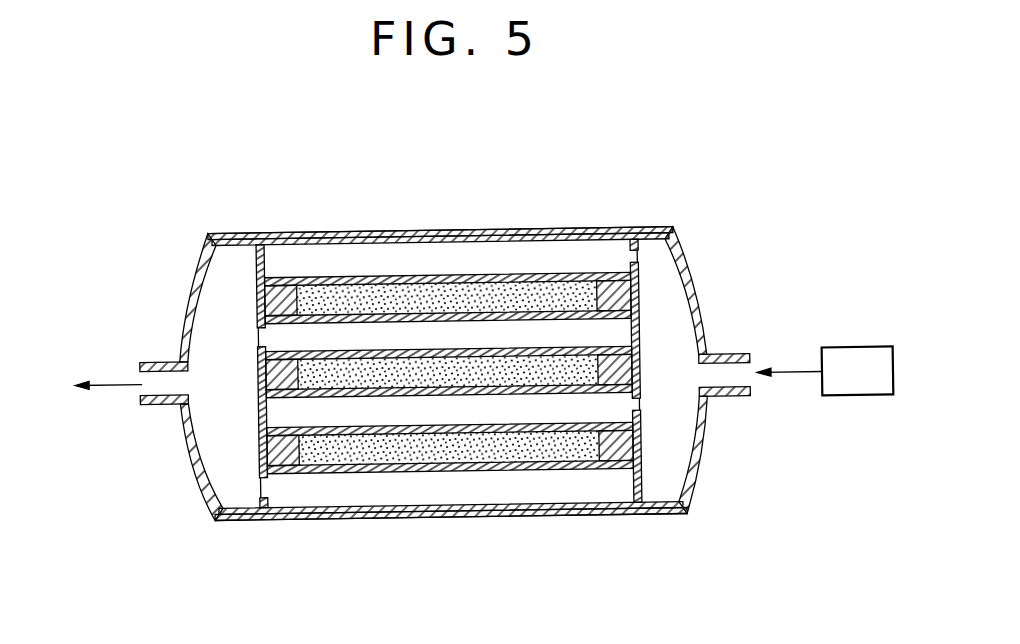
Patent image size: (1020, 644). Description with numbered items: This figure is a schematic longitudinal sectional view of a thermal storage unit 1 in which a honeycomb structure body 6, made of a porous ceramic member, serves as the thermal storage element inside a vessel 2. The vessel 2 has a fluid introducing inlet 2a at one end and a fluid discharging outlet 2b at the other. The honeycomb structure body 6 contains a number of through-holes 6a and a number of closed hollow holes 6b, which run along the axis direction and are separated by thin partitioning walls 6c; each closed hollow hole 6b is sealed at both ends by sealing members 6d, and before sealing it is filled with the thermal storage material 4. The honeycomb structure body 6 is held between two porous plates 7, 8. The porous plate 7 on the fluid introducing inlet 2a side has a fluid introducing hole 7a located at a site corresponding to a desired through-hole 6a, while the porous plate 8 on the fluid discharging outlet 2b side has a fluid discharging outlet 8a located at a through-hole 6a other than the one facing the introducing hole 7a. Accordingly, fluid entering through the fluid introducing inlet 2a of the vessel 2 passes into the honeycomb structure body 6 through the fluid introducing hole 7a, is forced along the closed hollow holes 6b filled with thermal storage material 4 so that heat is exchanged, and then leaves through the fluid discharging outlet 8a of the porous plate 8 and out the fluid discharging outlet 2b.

The thermal storage unit 1 is at (344, 228).
The vessel 2 is at (410, 230).
The fluid introducing inlet 2a is at (730, 377).
The fluid discharging outlet 2b is at (160, 387).
The thermal storage material 4 is at (470, 290).
The honeycomb structure body 6 is at (537, 230).
The through-hole 6a is at (478, 420).
The closed hollow hole 6b is at (363, 460).
The thin partitioning wall 6c is at (560, 468).
The sealing member 6d is at (287, 460).
The porous plate 7 is at (640, 297).
The fluid introducing hole 7a is at (640, 253).
The porous plate 8 is at (258, 272).
The fluid discharging outlet 8a is at (258, 337).